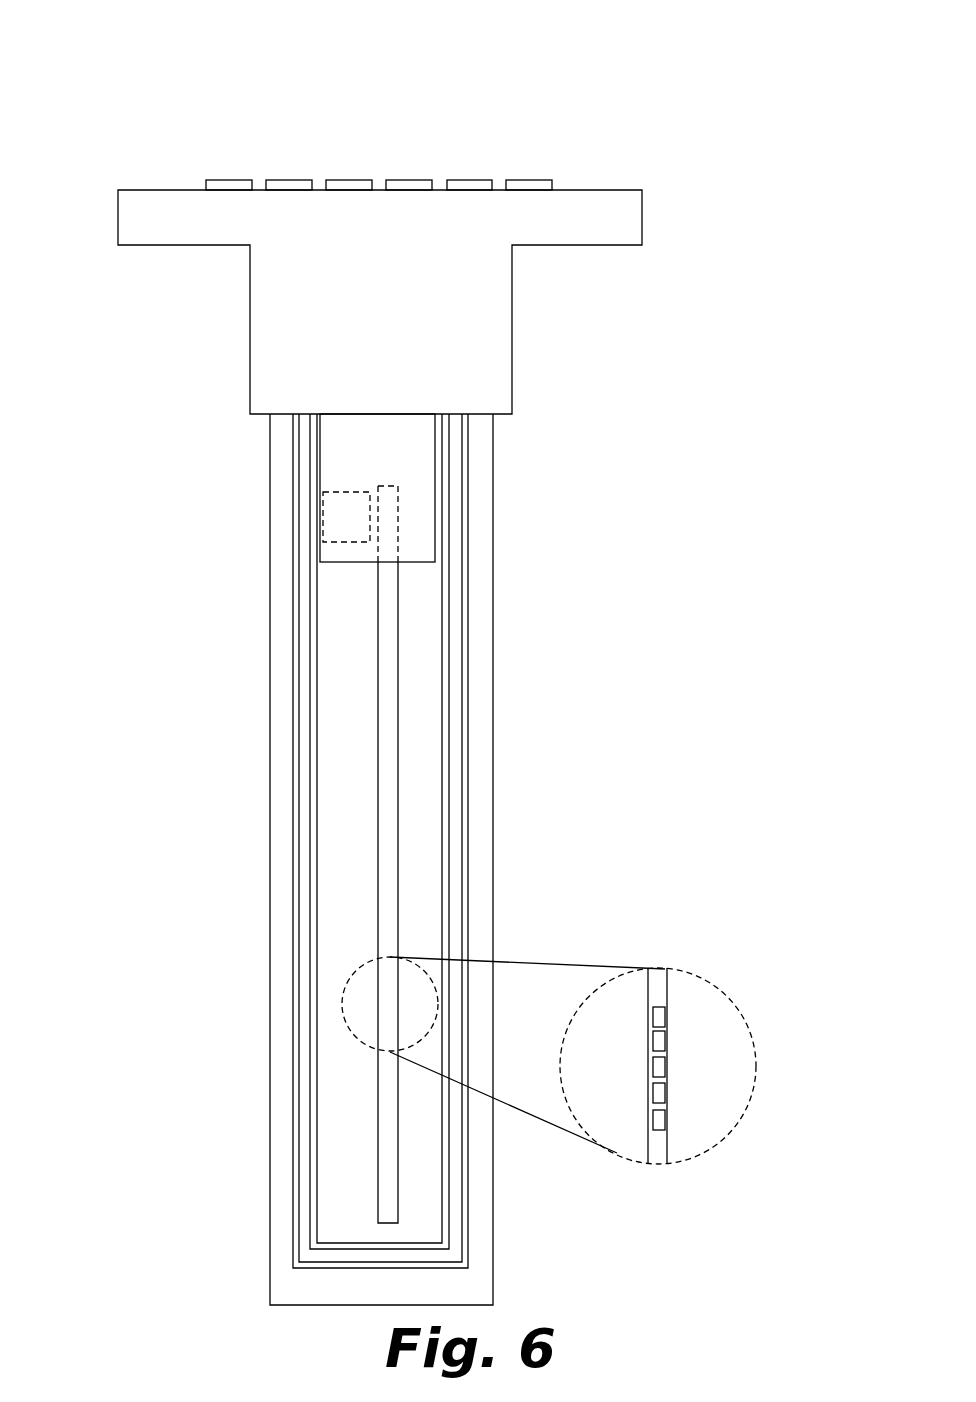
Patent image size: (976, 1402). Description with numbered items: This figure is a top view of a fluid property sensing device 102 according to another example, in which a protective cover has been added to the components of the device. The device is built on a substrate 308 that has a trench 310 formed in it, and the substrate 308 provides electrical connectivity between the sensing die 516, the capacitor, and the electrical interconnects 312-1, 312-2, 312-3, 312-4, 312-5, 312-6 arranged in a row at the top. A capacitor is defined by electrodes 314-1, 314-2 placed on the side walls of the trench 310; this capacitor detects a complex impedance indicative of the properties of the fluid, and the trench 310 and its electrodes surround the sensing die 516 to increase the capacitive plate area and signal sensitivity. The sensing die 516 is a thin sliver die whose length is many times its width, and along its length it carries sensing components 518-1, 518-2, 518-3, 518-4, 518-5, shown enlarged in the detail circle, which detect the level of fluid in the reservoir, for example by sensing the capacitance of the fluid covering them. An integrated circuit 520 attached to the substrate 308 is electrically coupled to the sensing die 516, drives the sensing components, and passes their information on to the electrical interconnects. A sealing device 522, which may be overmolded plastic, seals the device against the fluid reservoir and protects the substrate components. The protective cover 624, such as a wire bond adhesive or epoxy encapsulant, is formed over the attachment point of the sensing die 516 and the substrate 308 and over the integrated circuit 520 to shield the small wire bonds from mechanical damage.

The fluid property sensing device 102 is at (150, 78).
The electrical interconnect 312-1 is at (238, 187).
The electrical interconnect 312-2 is at (303, 187).
The electrical interconnect 312-3 is at (350, 185).
The electrical interconnect 312-4 is at (400, 185).
The electrical interconnect 312-5 is at (457, 186).
The electrical interconnect 312-6 is at (537, 182).
The sealing device 522 is at (298, 348).
The protective cover 624 is at (335, 457).
The integrated circuit 520 is at (340, 527).
The sensing die 516 is at (385, 663).
The trench 310 is at (314, 736).
The electrode 314-1 is at (463, 718).
The electrode 314-2 is at (442, 773).
The substrate 308 is at (278, 832).
The sensing component 518-1 is at (658, 1012).
The sensing component 518-2 is at (658, 1038).
The sensing component 518-3 is at (658, 1068).
The sensing component 518-4 is at (658, 1093).
The sensing component 518-5 is at (658, 1120).